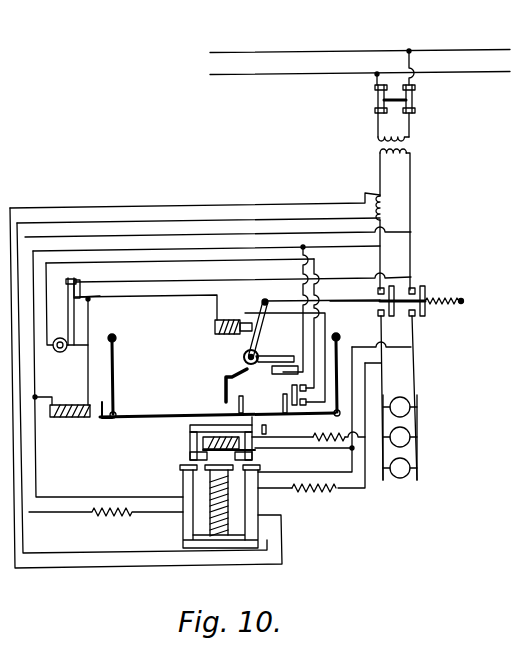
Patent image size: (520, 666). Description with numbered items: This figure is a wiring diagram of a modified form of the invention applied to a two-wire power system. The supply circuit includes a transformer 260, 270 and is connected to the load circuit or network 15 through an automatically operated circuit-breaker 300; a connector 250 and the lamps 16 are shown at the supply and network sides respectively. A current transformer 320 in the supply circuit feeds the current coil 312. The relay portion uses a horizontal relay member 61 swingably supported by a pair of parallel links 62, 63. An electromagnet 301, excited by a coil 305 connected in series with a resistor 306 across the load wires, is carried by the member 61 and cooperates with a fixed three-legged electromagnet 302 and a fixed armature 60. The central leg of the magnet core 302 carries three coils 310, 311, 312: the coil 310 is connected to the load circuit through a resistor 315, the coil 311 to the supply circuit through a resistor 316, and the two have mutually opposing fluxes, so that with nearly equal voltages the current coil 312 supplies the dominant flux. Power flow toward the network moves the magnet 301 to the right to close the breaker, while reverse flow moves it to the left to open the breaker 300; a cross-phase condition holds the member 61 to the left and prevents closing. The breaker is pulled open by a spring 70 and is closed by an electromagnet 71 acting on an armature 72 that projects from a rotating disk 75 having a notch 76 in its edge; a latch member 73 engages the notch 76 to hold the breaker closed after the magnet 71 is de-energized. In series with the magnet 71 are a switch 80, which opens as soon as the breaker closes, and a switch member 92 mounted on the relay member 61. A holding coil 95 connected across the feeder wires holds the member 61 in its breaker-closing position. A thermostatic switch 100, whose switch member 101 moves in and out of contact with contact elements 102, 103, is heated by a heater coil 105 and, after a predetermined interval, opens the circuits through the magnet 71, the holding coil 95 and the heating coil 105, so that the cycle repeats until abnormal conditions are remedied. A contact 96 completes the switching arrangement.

The connector bars 250 is at (418, 103).
The transformer 260 is at (407, 138).
The transformer 270 is at (402, 152).
The current transformer 320 is at (375, 196).
The circuit-breaker 300 is at (331, 303).
The spring 70 is at (440, 295).
The network 15 is at (416, 386).
The lamps 16 is at (408, 465).
The switch member 101 is at (68, 293).
The contact element 102 is at (75, 282).
The thermostatic switch 100 is at (68, 303).
The contact element 103 is at (90, 300).
The heater coil 105 is at (60, 352).
The holding coil 95 is at (72, 419).
The parallel link 62 is at (118, 386).
The relay member 61 is at (151, 411).
The parallel link 63 is at (341, 351).
The electromagnet 71 is at (228, 318).
The armature 72 is at (263, 333).
The rotating disk 75 is at (244, 356).
The notch 76 is at (245, 368).
The switch 80 is at (290, 360).
The latch member 73 is at (225, 396).
The switch member 92 is at (292, 389).
The contact 96 is at (243, 405).
The fixed armature 60 is at (268, 430).
The electromagnet 301 is at (187, 438).
The resistor 306 is at (325, 445).
The resistor 315 is at (330, 492).
The resistor 316 is at (106, 516).
The fixed electromagnet 302 is at (183, 546).
The coil 305 is at (181, 457).
The coil 310 is at (197, 476).
The coil 311 is at (232, 496).
The current coil 312 is at (212, 515).